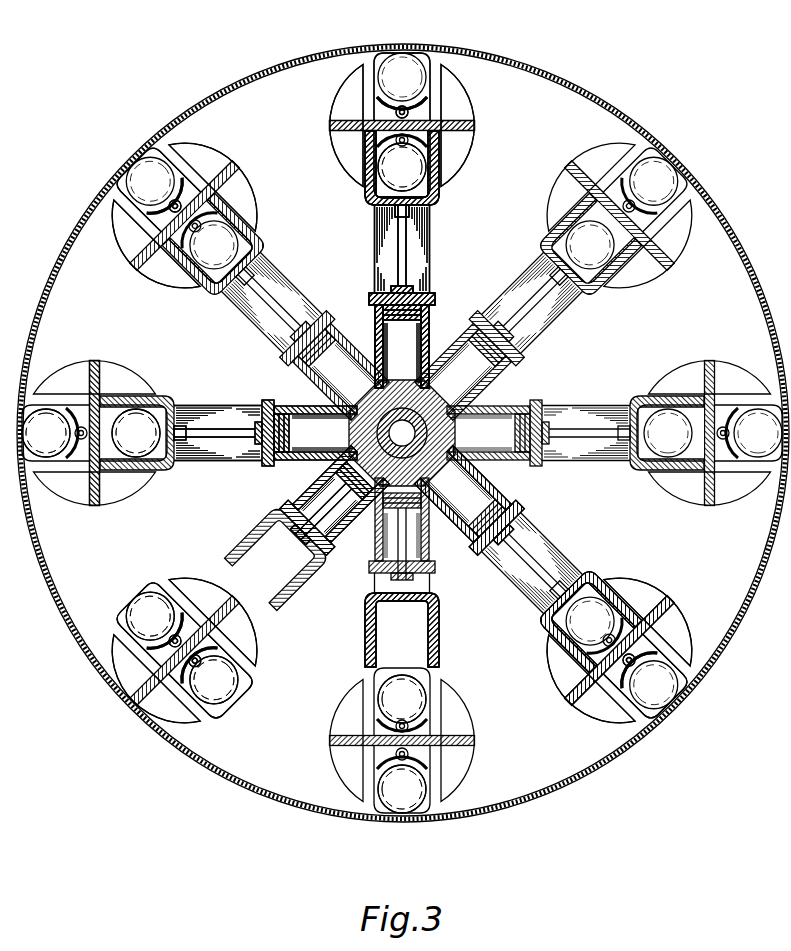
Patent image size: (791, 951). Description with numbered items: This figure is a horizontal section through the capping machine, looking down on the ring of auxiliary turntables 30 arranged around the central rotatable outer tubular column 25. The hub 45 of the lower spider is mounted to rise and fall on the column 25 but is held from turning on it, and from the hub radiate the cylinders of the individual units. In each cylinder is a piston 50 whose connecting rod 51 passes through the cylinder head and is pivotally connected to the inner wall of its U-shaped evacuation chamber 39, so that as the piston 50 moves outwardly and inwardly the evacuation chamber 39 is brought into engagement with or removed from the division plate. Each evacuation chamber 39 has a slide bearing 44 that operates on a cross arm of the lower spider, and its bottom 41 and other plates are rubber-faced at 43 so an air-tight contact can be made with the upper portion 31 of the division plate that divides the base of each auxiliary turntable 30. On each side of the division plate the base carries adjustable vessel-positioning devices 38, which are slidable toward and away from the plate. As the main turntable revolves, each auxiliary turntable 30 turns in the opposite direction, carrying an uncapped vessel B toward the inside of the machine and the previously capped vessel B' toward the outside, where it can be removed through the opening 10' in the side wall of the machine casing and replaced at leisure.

The opening 10' is at (403, 442).
The rotatable outer tubular column 25 is at (430, 433).
The auxiliary turntable 30 is at (399, 68).
The upper portion of division plate 31 is at (457, 127).
The adjustable vessel-positioning device 38 is at (412, 148).
The U-shaped evacuation chamber 39 is at (433, 201).
The bottom 41 is at (441, 165).
The rubber facing 43 is at (430, 626).
The slide bearing 44 is at (430, 280).
The hub 45 is at (455, 398).
The piston 50 is at (431, 297).
The connecting rod 51 is at (404, 256).
The vessel B is at (269, 611).
The previously capped vessel B' is at (154, 581).